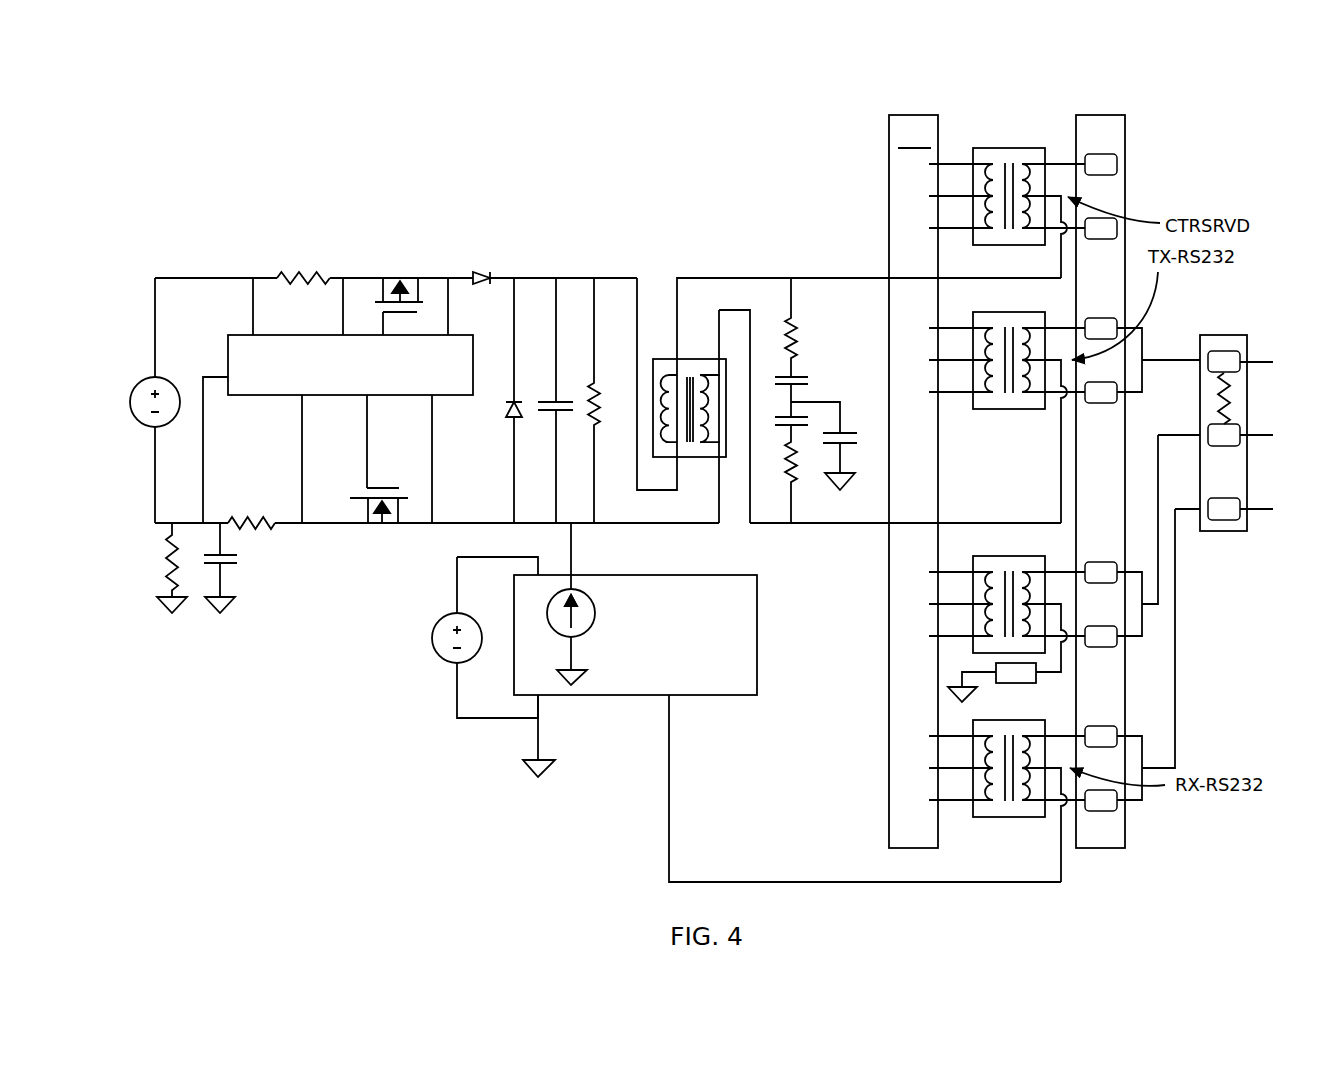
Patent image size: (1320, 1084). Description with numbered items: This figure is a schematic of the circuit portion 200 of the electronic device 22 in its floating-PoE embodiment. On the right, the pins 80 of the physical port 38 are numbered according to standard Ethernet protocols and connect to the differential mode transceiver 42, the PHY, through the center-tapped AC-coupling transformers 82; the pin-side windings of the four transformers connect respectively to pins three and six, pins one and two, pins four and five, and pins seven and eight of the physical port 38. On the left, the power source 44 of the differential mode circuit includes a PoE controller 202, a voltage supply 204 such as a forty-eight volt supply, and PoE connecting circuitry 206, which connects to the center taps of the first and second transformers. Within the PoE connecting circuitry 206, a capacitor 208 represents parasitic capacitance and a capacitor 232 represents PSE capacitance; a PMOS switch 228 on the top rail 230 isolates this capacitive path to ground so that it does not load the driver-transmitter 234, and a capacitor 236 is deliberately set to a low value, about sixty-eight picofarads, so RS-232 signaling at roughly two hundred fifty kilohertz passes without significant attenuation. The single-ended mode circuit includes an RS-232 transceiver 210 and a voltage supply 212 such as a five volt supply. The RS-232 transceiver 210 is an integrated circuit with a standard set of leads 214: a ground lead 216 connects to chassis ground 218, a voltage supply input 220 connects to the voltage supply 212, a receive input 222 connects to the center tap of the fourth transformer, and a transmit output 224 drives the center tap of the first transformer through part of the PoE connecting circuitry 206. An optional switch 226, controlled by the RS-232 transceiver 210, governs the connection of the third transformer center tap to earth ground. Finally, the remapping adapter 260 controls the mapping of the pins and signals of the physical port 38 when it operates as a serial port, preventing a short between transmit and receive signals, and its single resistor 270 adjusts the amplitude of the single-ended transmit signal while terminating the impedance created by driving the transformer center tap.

The electronic device 22 is at (172, 157).
The circuit portion 200 is at (363, 157).
The power source 44 is at (220, 255).
The voltage supply 204 is at (173, 363).
The PoE controller 202 is at (366, 376).
The PMOS switch 228 is at (388, 263).
The top rail 230 is at (430, 278).
The PoE connecting circuitry 206 is at (507, 250).
The capacitor 232 is at (575, 383).
The capacitor 208 is at (247, 572).
The capacitor 236 is at (850, 415).
The RS-232 transceiver 210 is at (651, 644).
The transmit output 224 is at (572, 557).
The driver-transmitter 234 is at (608, 610).
The voltage supply input 220 is at (537, 563).
The voltage supply 212 is at (435, 680).
The ground lead 216 is at (540, 702).
The chassis ground 218 is at (535, 767).
The receive input 222 is at (670, 710).
The leads 214 is at (628, 768).
The differential mode transceiver 42 is at (888, 836).
The center-tapped AC-coupling transformers 82 is at (1007, 458).
The switch 226 is at (1020, 685).
The pins 80 is at (1120, 138).
The physical port 38 is at (1110, 852).
The resistor 270 is at (1223, 340).
The remapping adapter 260 is at (1232, 533).